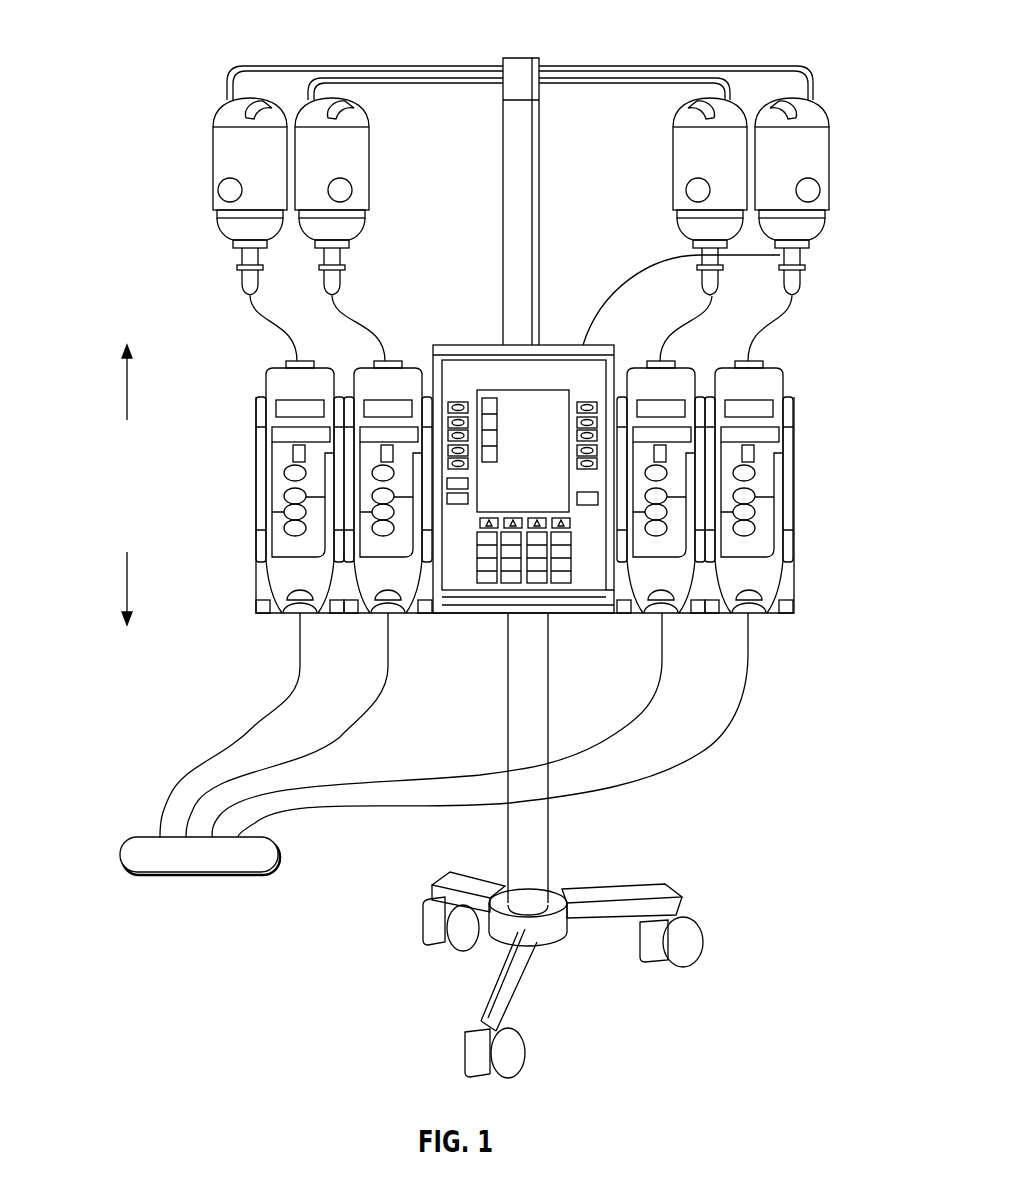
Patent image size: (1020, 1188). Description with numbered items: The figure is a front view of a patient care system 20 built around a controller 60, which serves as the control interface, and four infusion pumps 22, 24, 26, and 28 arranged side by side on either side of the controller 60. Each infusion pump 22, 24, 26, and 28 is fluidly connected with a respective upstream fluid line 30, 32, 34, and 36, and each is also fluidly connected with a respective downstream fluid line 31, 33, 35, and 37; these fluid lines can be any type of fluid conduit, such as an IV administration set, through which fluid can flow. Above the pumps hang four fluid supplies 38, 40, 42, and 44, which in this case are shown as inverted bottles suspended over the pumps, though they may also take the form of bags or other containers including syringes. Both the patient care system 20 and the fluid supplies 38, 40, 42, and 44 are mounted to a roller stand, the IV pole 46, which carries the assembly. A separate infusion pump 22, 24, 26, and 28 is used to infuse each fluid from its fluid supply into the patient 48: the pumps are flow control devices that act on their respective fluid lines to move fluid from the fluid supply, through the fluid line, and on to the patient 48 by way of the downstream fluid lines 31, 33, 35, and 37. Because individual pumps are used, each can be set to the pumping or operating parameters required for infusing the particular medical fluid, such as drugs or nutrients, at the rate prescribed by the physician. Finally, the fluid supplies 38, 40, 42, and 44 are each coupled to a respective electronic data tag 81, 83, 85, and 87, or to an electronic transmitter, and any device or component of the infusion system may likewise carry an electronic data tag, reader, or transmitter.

The patient care system 20 is at (204, 46).
The infusion pump 22 is at (780, 368).
The infusion pump 24 is at (636, 368).
The infusion pump 26 is at (372, 368).
The infusion pump 28 is at (278, 368).
The upstream fluid line 30 is at (795, 308).
The downstream fluid line 31 is at (753, 655).
The upstream fluid line 32 is at (706, 316).
The downstream fluid line 33 is at (657, 665).
The upstream fluid line 34 is at (345, 318).
The downstream fluid line 35 is at (373, 700).
The upstream fluid line 36 is at (262, 318).
The downstream fluid line 37 is at (292, 680).
The fluid supply 38 is at (830, 150).
The fluid supply 40 is at (672, 150).
The fluid supply 42 is at (372, 150).
The fluid supply 44 is at (213, 150).
The IV pole 46 is at (548, 838).
The patient 48 is at (118, 852).
The controller 60 is at (497, 345).
The electronic data tag 81 is at (822, 192).
The electronic data tag 83 is at (685, 192).
The electronic data tag 85 is at (352, 192).
The electronic data tag 87 is at (218, 192).